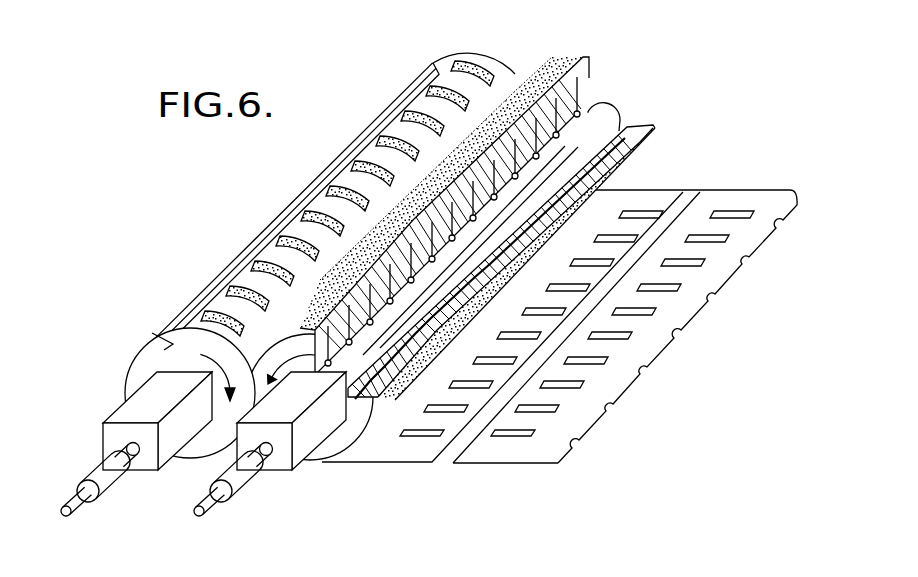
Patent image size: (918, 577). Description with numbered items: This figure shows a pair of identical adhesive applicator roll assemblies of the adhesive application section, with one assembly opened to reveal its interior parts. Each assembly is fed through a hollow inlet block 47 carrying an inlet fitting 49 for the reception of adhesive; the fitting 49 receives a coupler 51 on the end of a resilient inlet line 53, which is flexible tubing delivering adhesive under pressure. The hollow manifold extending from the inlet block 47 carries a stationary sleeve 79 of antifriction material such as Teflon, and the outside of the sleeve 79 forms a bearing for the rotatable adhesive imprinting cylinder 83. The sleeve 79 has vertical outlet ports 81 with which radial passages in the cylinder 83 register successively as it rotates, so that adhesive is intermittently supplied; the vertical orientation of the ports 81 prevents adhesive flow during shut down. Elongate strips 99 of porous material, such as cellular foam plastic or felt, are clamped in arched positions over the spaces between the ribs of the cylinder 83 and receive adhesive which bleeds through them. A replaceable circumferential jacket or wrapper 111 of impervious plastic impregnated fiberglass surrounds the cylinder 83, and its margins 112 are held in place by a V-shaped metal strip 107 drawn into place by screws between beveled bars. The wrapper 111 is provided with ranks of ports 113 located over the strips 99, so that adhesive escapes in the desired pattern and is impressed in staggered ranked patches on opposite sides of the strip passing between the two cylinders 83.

The hollow inlet block 47 is at (194, 444).
The inlet fitting 49 is at (137, 452).
The coupler 51 is at (119, 483).
The resilient inlet line 53 is at (90, 504).
The sleeve 79 is at (600, 115).
The vertical outlet port 81 is at (577, 119).
The adhesive imprinting cylinder 83 is at (585, 72).
The elongate strip 99 is at (535, 87).
The V-shaped metal strip 107 is at (157, 337).
The circumferential jacket or wrapper 111 is at (428, 447).
The margins of the wrapper 112 is at (617, 394).
The port 113 is at (730, 212).